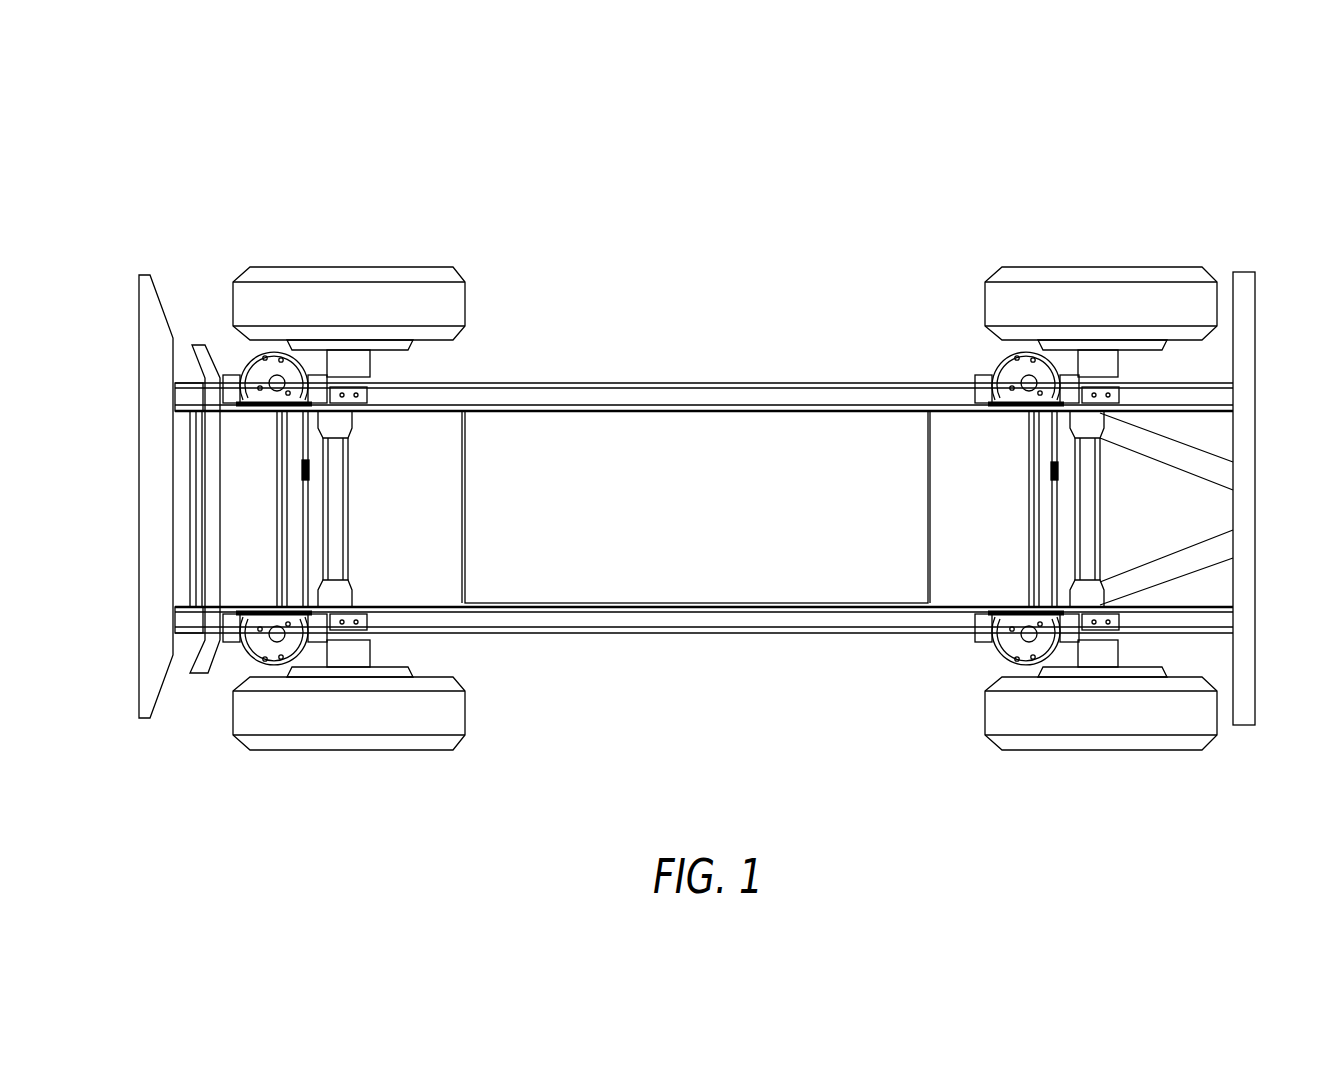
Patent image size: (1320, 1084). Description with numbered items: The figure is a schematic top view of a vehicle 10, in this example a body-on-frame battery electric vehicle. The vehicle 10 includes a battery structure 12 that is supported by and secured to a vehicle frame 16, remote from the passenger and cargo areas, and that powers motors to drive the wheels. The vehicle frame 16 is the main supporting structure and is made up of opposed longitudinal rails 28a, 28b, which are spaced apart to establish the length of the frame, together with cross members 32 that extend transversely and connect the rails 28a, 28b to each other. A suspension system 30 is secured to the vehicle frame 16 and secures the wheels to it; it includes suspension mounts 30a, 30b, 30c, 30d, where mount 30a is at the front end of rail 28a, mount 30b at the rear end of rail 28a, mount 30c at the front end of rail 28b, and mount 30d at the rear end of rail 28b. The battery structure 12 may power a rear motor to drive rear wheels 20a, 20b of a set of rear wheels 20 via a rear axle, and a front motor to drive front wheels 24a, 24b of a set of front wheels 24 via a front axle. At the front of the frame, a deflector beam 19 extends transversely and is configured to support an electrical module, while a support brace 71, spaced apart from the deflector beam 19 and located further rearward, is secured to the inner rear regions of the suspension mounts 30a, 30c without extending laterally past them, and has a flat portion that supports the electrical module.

The vehicle 10 is at (952, 200).
The battery structure 12 is at (633, 432).
The vehicle frame 16 is at (818, 350).
The deflector beam 19 is at (198, 338).
The set of rear wheels 20 is at (1180, 795).
The rear wheel 20a is at (1130, 273).
The rear wheel 20b is at (1027, 720).
The set of front wheels 24 is at (427, 760).
The front wheel 24a is at (427, 273).
The front wheel 24b is at (335, 720).
The longitudinal rail 28a is at (718, 395).
The longitudinal rail 28b is at (655, 633).
The suspension system 30 is at (238, 668).
The suspension mount 30a is at (268, 352).
The suspension mount 30b is at (1000, 380).
The suspension mount 30c is at (277, 660).
The suspension mount 30d is at (1015, 645).
The cross members 32 is at (335, 512).
The support brace 71 is at (305, 462).